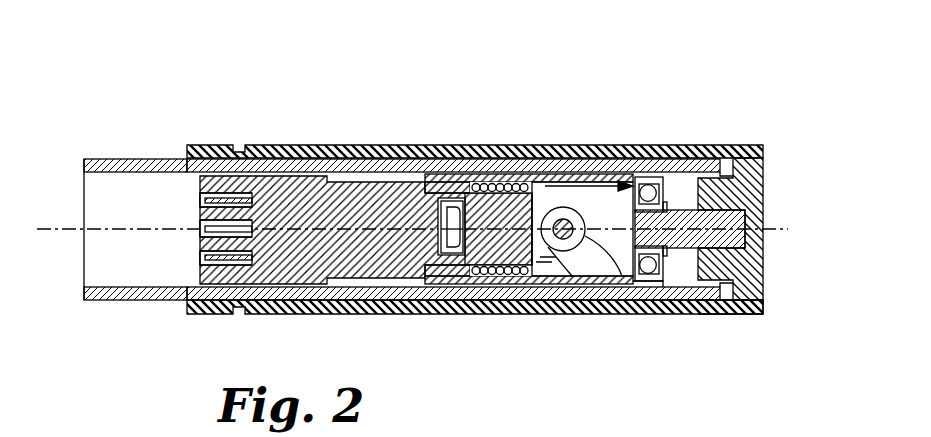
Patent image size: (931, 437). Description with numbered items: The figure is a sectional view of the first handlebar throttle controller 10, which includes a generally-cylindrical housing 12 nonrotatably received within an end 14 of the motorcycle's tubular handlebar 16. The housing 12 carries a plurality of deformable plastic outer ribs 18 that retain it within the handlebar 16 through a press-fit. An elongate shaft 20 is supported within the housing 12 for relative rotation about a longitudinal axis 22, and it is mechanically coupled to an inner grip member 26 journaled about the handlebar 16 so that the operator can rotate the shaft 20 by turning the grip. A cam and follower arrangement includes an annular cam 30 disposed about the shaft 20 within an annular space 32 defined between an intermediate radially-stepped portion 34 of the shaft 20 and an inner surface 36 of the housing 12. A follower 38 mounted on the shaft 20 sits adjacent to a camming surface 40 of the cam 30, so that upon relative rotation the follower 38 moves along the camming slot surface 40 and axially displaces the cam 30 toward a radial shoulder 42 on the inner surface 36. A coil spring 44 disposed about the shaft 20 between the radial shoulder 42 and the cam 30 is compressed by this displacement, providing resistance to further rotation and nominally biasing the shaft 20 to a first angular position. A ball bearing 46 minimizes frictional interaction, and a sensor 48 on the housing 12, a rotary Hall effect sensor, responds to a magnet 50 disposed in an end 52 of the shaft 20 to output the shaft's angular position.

The handlebar throttle controller 10 is at (707, 67).
The housing 12 is at (446, 159).
The end 14 is at (743, 144).
The handlebar 16 is at (135, 301).
The deformable plastic outer ribs 18 is at (388, 170).
The shaft 20 is at (688, 250).
The longitudinal axis 22 is at (788, 229).
The inner grip member 26 is at (737, 315).
The annular cam 30 is at (538, 183).
The annular space 32 is at (638, 177).
The intermediate radially-stepped portion 34 is at (597, 276).
The inner surface 36 is at (505, 277).
The follower 38 is at (563, 207).
The camming surface 40 is at (548, 250).
The radial shoulder 42 is at (461, 178).
The coil spring 44 is at (500, 266).
The ball bearing 46 is at (657, 283).
The sensor 48 is at (290, 176).
The magnet 50 is at (455, 258).
The end 52 is at (427, 266).